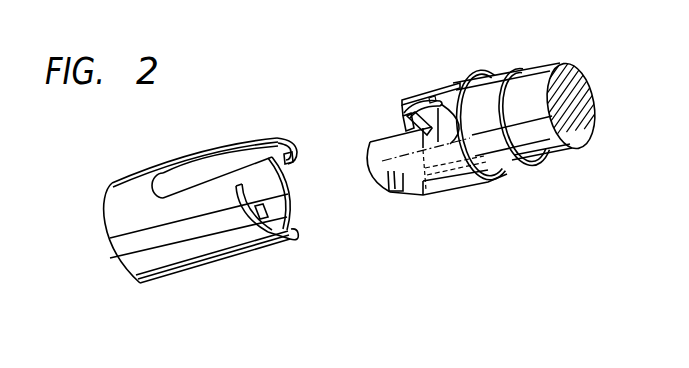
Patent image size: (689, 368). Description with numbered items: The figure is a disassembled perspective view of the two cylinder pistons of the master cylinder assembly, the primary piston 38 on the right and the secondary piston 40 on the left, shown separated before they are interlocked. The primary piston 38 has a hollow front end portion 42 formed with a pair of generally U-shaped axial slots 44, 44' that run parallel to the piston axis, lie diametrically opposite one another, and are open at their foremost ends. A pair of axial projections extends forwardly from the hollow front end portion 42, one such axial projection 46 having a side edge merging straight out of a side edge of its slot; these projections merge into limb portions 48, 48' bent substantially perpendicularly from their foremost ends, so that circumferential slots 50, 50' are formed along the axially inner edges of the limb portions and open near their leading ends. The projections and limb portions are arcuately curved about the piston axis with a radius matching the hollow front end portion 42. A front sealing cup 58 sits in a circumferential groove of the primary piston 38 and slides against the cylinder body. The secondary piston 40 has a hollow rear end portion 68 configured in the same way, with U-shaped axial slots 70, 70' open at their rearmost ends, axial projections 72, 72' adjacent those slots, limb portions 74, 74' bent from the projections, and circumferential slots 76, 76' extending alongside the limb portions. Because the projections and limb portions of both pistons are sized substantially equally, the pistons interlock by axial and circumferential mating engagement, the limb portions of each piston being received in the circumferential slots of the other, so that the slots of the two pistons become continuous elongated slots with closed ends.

The primary piston 38 is at (458, 75).
The secondary piston 40 is at (232, 142).
The hollow front end portion 42 is at (477, 188).
The U-shaped axial slot 44 is at (431, 71).
The U-shaped axial slot 44' is at (455, 210).
The axial projection 46 is at (378, 137).
The limb portion 48 is at (377, 191).
The limb portion 48' is at (380, 94).
The circumferential slot 50 is at (383, 205).
The circumferential slot 50' is at (413, 89).
The front sealing cup 58 is at (512, 183).
The hollow rear end portion 68 is at (210, 264).
The U-shaped axial slot 70 is at (314, 245).
The U-shaped axial slot 70' is at (212, 158).
The axial projection 72 is at (289, 262).
The axial projection 72' is at (278, 159).
The limb portion 74 is at (280, 205).
The limb portion 74' is at (303, 136).
The circumferential slot 76 is at (254, 187).
The circumferential slot 76' is at (316, 151).